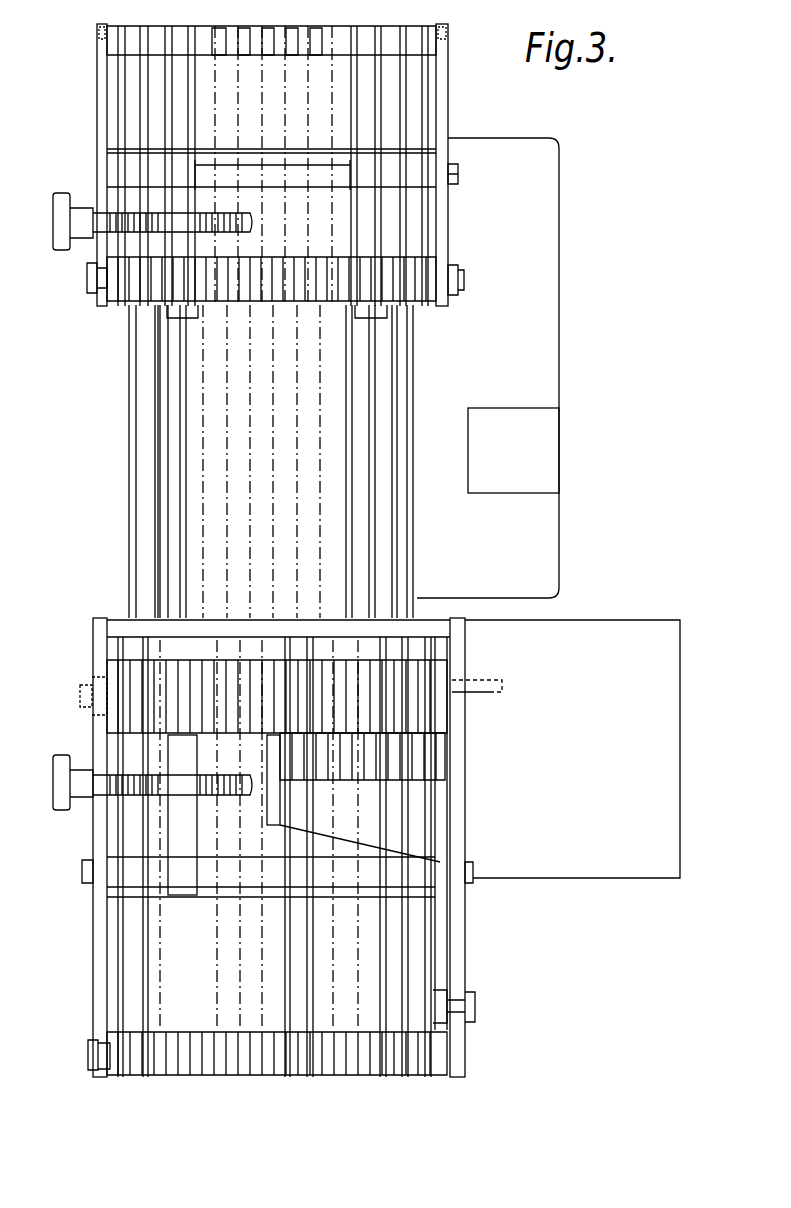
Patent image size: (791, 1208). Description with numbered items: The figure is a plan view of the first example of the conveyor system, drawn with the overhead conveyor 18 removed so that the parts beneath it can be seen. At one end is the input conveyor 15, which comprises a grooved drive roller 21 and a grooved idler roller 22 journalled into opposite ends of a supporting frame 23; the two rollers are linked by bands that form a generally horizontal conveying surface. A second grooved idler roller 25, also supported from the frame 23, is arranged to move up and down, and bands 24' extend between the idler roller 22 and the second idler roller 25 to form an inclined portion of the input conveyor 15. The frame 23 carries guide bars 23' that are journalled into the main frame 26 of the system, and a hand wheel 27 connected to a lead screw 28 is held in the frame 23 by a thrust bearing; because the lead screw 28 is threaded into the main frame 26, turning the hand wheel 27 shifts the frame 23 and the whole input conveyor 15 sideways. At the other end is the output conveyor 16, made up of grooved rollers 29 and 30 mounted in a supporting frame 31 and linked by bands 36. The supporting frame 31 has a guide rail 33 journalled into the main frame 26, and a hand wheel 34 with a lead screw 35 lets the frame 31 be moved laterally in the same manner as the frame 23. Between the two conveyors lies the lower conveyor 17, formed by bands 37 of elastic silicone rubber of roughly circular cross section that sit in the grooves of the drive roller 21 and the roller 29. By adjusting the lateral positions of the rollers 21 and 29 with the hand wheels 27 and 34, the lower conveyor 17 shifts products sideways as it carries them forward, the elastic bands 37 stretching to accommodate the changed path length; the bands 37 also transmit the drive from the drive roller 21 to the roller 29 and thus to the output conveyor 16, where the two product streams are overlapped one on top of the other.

The input conveyor 15 is at (351, 842).
The output conveyor 16 is at (295, 165).
The lower conveyor 17 is at (289, 461).
The overhead conveyor 18 is at (351, 823).
The grooved drive roller 21 is at (125, 677).
The grooved idler roller 22 is at (133, 1047).
The supporting frame 23 is at (276, 847).
The guide bars 23' is at (88, 857).
The bands 24' is at (467, 857).
The second grooved idler roller 25 is at (418, 762).
The main frame 26 is at (545, 248).
The hand wheel 27 is at (59, 762).
The lead screw 28 is at (130, 795).
The grooved roller 29 is at (112, 290).
The grooved roller 30 is at (130, 40).
The supporting frame 31 is at (102, 130).
The guide rail 33 is at (432, 168).
The hand wheel 34 is at (60, 200).
The lead screw 35 is at (125, 232).
The bands 36 is at (143, 95).
The bands 37 is at (157, 452).